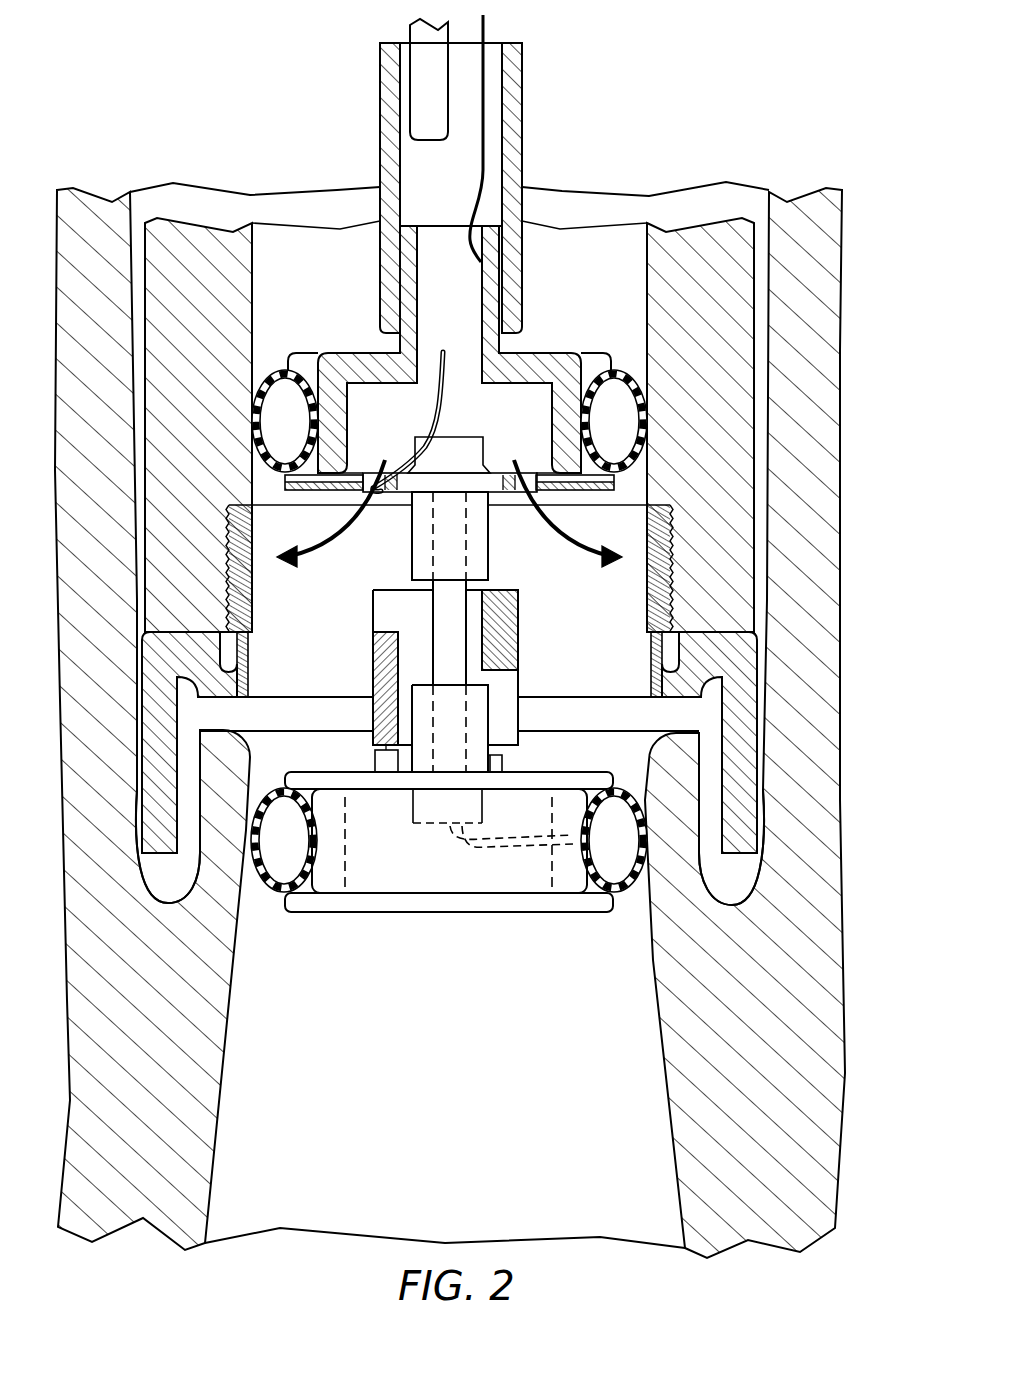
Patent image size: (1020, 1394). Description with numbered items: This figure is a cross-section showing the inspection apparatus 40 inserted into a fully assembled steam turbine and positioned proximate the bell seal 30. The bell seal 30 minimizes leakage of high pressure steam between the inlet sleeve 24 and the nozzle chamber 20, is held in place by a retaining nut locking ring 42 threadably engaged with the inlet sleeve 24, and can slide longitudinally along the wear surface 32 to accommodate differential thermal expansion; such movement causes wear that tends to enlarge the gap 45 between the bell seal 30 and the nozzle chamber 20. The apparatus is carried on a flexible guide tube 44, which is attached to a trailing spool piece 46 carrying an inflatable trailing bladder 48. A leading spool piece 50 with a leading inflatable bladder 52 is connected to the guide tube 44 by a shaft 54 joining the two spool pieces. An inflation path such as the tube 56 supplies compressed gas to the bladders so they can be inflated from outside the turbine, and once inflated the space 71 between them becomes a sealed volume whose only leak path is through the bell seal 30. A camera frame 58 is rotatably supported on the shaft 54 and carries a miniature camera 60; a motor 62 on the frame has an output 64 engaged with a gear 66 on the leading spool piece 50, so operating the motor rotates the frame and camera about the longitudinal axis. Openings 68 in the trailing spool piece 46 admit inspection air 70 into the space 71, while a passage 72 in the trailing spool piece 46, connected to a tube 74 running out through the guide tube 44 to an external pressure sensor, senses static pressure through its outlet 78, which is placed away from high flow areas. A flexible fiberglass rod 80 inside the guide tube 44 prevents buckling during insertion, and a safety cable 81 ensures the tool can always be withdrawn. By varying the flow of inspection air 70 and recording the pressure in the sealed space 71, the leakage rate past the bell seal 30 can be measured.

The nozzle chamber 20 is at (838, 1015).
The inlet sleeve 24 is at (247, 268).
The bell seal 30 is at (737, 745).
The wear surface 32 is at (133, 872).
The inspection apparatus 40 is at (468, 986).
The retaining nut locking ring 42 is at (648, 606).
The guide tube 44 is at (522, 132).
The gap 45 is at (767, 832).
The trailing spool piece 46 is at (530, 353).
The trailing inflatable bladder 48 is at (280, 372).
The leading spool piece 50 is at (570, 772).
The leading inflatable bladder 52 is at (604, 906).
The shaft 54 is at (490, 578).
The tube 56 is at (476, 850).
The camera frame 58 is at (505, 712).
The camera 60 is at (518, 650).
The motor 62 is at (375, 662).
The output 64 is at (375, 762).
The gear 66 is at (505, 767).
The openings 68 is at (392, 491).
The inspection air 70 is at (561, 546).
The space 71 is at (352, 594).
The passage 72 is at (327, 486).
The tube 74 is at (431, 412).
The outlet 78 is at (285, 484).
The flexible fiberglass rod 80 is at (428, 142).
The safety cable 81 is at (486, 30).